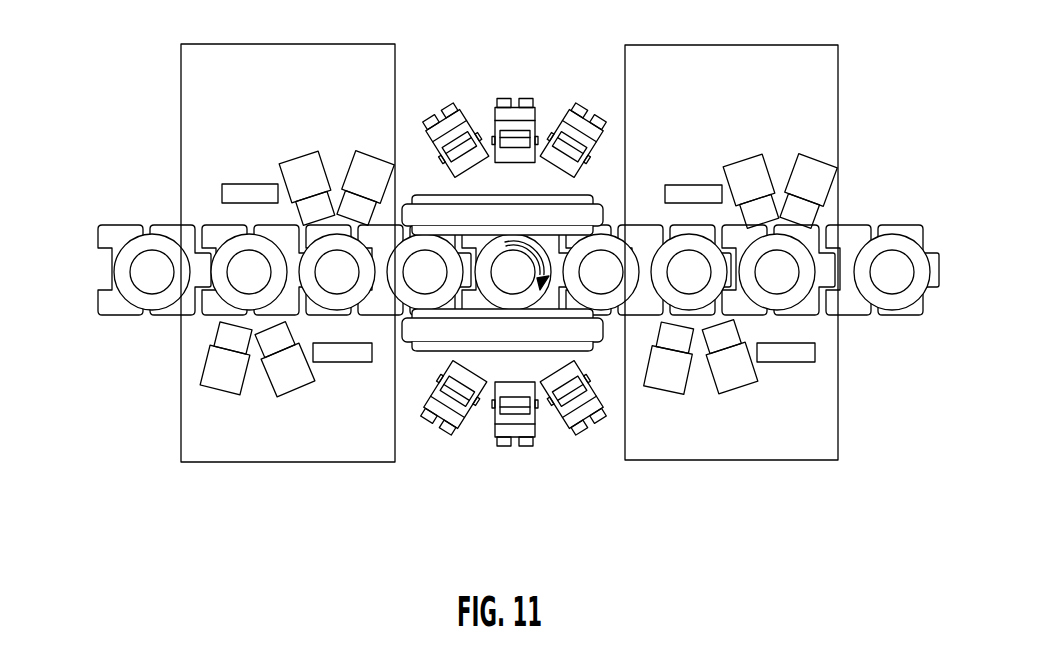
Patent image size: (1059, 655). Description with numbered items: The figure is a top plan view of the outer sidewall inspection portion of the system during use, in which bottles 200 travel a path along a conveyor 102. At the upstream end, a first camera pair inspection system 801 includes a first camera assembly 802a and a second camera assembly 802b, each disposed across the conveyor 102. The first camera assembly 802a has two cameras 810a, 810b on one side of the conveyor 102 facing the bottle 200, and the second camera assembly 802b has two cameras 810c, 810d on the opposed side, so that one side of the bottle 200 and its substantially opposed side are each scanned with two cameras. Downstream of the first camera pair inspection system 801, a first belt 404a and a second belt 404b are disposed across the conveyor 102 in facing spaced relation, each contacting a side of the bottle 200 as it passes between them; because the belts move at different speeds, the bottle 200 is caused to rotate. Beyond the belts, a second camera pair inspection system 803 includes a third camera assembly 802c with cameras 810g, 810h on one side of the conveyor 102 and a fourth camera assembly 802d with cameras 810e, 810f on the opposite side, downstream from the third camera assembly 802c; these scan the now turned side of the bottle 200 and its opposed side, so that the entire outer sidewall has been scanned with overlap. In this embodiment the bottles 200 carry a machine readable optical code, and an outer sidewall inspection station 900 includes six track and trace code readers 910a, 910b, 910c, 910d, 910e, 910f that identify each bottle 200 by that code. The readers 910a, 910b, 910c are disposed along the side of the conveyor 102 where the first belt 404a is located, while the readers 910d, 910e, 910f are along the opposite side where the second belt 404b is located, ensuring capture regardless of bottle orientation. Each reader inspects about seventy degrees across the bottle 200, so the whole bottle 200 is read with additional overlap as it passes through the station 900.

The conveyor 102 is at (493, 303).
The bottle 200 is at (511, 278).
The first belt 404a is at (560, 337).
The second belt 404b is at (462, 213).
The first camera pair inspection system 801 is at (271, 261).
The second camera pair inspection system 803 is at (763, 278).
The first camera assembly 802a is at (222, 188).
The second camera assembly 802b is at (378, 352).
The third camera assembly 802c is at (663, 187).
The fourth camera assembly 802d is at (815, 362).
The camera 810a is at (223, 392).
The camera 810b is at (292, 388).
The camera 810c is at (303, 160).
The camera 810d is at (370, 155).
The camera 810e is at (747, 162).
The camera 810f is at (813, 158).
The camera 810g is at (670, 390).
The camera 810h is at (744, 388).
The outer sidewall inspection station 900 is at (512, 306).
The track and trace code reader 910a is at (448, 422).
The track and trace code reader 910b is at (503, 448).
The track and trace code reader 910c is at (567, 425).
The track and trace code reader 910d is at (450, 120).
The track and trace code reader 910e is at (512, 98).
The track and trace code reader 910f is at (582, 118).